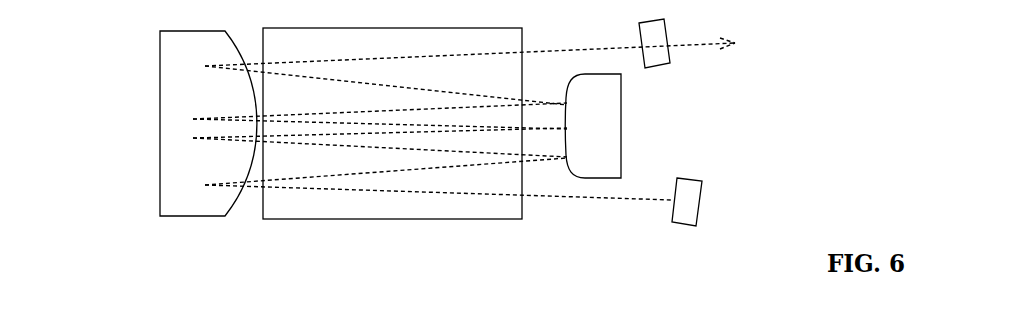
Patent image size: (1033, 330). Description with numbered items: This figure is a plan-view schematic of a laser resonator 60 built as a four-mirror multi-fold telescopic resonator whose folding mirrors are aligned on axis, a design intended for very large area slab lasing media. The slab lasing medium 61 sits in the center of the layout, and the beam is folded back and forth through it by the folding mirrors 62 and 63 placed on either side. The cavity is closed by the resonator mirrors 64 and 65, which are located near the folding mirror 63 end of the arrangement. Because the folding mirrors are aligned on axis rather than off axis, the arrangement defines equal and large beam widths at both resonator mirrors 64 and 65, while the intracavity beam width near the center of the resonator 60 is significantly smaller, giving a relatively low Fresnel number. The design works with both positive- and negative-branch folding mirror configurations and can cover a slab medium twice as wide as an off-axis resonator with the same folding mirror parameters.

The laser resonator 60 is at (108, 34).
The slab lasing medium 61 is at (449, 208).
The folding mirror 62 is at (177, 79).
The folding mirror 63 is at (603, 157).
The resonator mirror 64 is at (653, 37).
The resonator mirror 65 is at (687, 216).